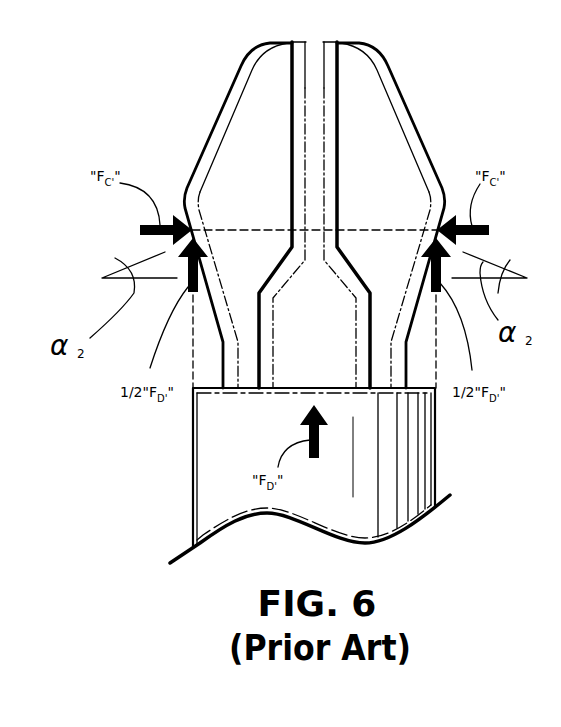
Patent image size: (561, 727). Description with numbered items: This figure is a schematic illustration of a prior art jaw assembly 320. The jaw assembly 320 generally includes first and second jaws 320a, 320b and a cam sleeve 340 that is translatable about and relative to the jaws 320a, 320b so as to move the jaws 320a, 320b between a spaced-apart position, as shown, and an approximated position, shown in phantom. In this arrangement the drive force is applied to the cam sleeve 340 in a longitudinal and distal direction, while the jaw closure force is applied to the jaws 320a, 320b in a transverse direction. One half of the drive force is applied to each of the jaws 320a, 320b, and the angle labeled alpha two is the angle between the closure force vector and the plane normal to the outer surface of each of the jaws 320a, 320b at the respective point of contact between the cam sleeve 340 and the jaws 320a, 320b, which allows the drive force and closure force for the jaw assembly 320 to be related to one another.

The jaw assembly 320 is at (141, 115).
The first jaw 320a is at (372, 102).
The second jaw 320b is at (262, 93).
The cam sleeve 340 is at (212, 483).